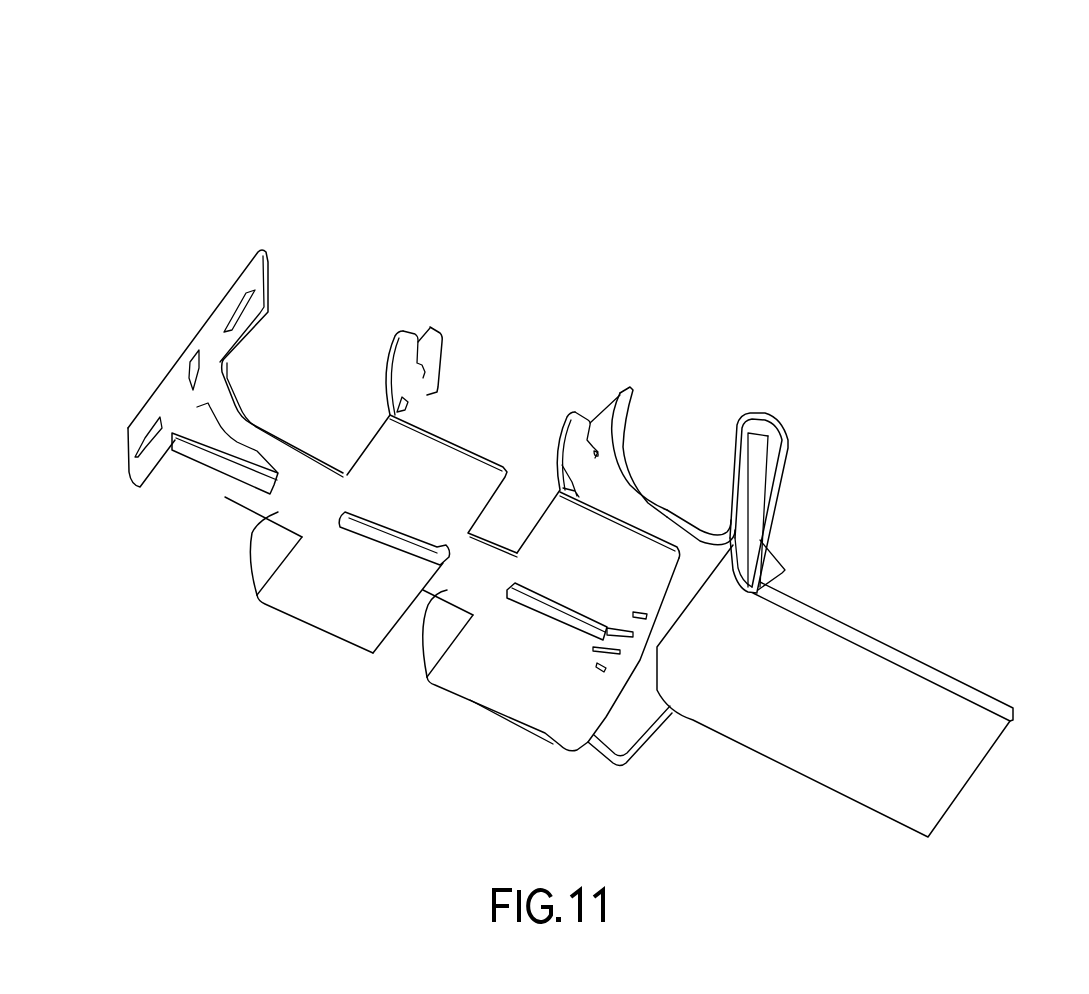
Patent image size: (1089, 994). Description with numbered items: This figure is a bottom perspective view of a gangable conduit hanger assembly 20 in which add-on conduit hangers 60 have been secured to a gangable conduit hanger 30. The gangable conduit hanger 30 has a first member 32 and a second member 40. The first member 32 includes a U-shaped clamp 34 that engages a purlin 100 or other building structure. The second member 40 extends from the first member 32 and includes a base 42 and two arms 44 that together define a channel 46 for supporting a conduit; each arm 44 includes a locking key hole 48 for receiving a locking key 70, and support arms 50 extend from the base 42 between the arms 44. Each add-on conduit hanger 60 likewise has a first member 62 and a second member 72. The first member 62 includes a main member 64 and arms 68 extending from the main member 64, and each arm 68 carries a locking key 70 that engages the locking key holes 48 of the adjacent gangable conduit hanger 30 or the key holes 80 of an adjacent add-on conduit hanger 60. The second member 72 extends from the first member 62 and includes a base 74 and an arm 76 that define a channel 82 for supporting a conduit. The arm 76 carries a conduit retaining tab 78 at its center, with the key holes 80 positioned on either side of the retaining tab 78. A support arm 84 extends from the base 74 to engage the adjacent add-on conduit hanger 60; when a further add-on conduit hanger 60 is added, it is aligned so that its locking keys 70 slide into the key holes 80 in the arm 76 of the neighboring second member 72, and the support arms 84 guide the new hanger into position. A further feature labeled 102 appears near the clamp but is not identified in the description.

The gangable conduit hanger assembly 20 is at (310, 108).
The gangable conduit hanger 30 is at (797, 335).
The first member 32 is at (770, 412).
The U-shaped clamp 34 is at (768, 431).
The second member 40 is at (693, 557).
The base 42 is at (670, 513).
The arms 44 is at (607, 465).
The channel 46 is at (660, 493).
The locking key hole 48 is at (591, 448).
The support arms 50 is at (552, 613).
The add-on conduit hanger 60 is at (207, 205).
The first member 62 is at (307, 602).
The main member 64 is at (377, 613).
The arms 68 is at (370, 388).
The locking key 70 is at (413, 387).
The second member 72 is at (240, 497).
The base 74 is at (278, 512).
The arm 76 is at (223, 408).
The conduit retaining tab 78 is at (192, 366).
The key holes 80 is at (148, 428).
The channel 82 is at (302, 427).
The support arm 84 is at (203, 455).
The purlin 100 is at (930, 703).
The clip edge 102 is at (765, 438).